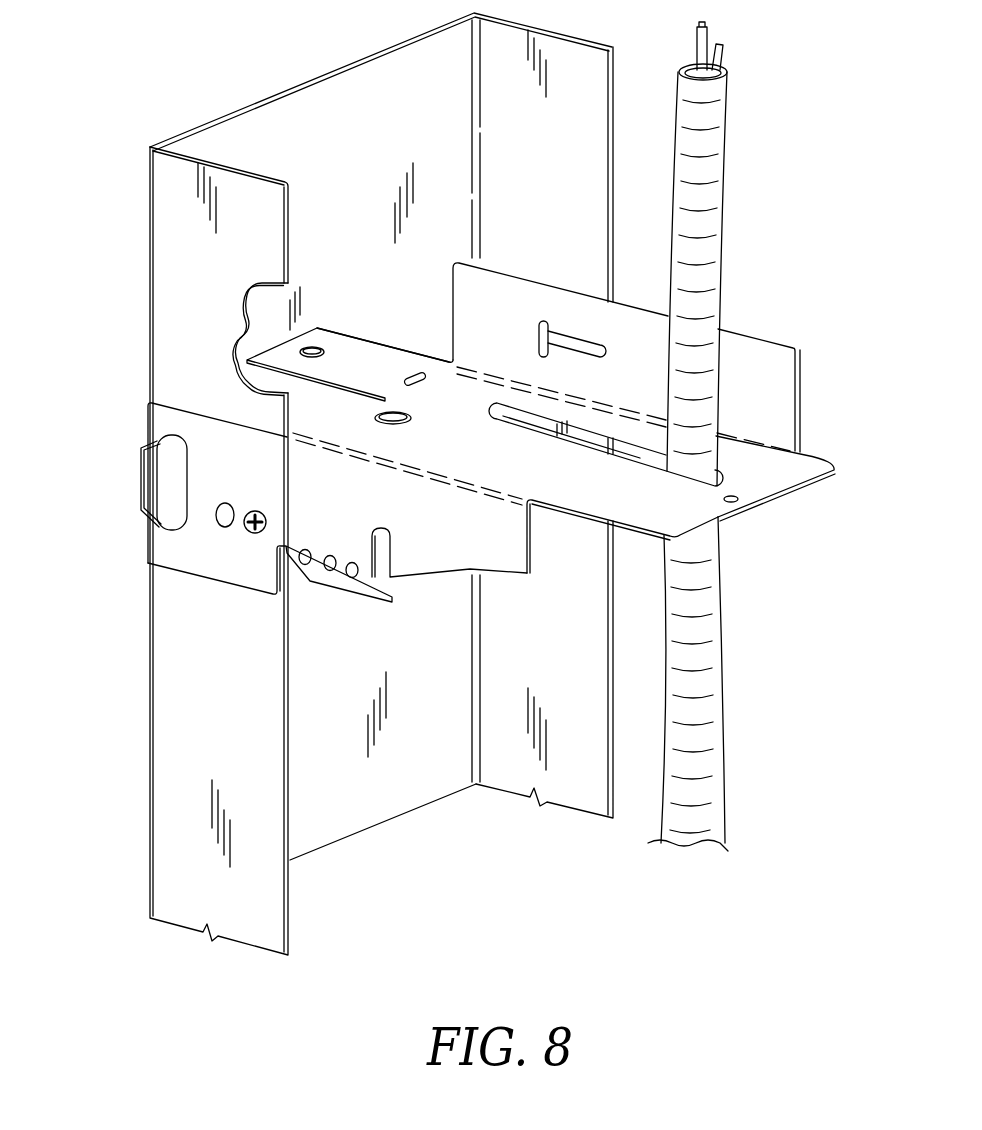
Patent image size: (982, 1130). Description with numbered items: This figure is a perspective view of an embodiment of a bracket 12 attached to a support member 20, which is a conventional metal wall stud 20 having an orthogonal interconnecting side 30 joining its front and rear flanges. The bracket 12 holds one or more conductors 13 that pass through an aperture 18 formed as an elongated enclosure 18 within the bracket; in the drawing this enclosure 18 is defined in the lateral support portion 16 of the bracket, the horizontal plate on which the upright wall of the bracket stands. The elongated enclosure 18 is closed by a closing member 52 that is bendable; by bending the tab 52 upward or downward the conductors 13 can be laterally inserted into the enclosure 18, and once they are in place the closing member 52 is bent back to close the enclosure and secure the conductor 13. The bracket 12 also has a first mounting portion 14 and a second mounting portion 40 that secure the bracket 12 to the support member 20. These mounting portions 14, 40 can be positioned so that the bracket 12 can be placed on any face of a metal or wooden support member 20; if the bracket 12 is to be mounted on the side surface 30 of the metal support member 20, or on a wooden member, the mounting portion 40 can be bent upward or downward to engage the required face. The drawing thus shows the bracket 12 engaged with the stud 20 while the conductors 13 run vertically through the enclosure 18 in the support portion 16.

The bracket 12 is at (458, 420).
The conductors 13 is at (713, 172).
The first mounting portion 14 is at (163, 545).
The base plate of bracket 16 is at (523, 478).
The aperture 18 is at (633, 440).
The support member 20 is at (341, 484).
The interconnecting side 30 is at (292, 115).
The second mounting portion 40 is at (277, 353).
The closing member 52 is at (748, 502).